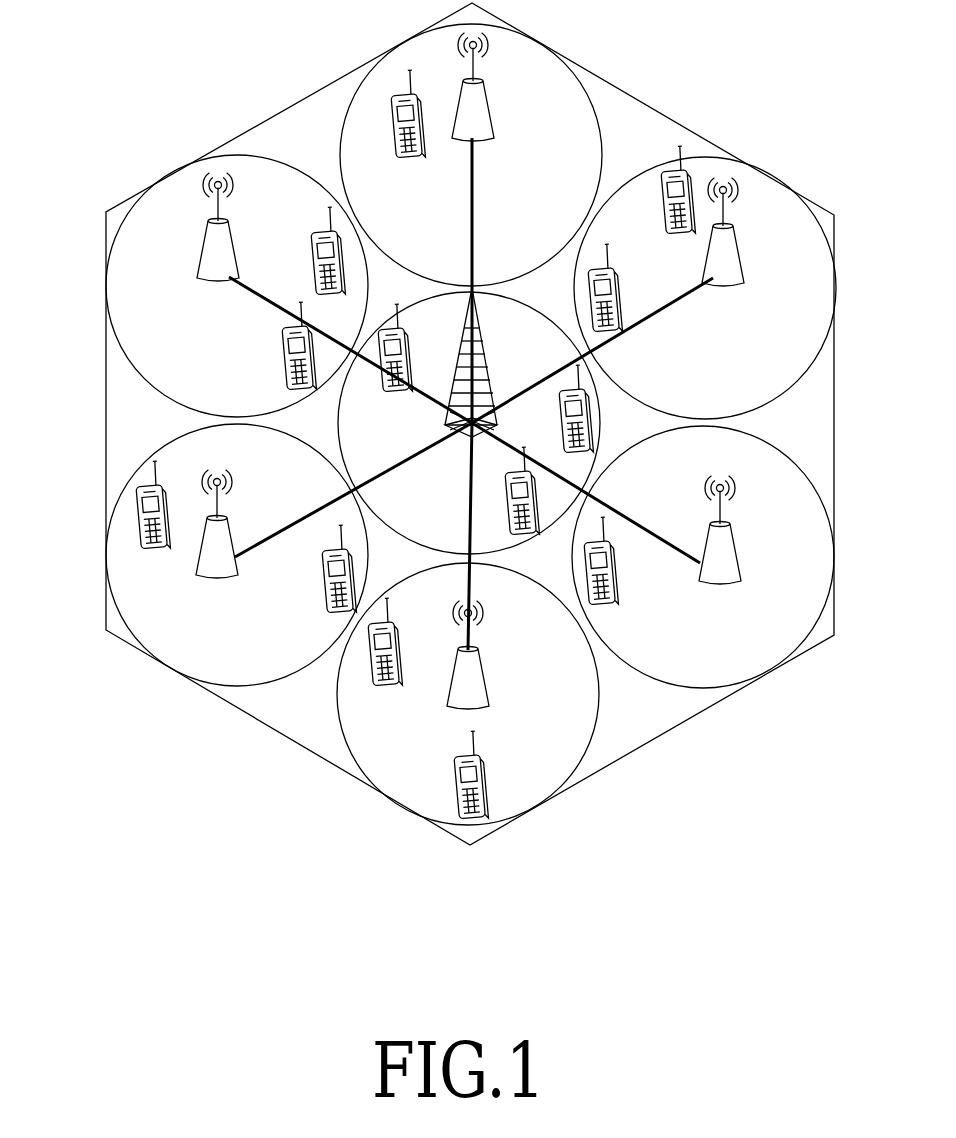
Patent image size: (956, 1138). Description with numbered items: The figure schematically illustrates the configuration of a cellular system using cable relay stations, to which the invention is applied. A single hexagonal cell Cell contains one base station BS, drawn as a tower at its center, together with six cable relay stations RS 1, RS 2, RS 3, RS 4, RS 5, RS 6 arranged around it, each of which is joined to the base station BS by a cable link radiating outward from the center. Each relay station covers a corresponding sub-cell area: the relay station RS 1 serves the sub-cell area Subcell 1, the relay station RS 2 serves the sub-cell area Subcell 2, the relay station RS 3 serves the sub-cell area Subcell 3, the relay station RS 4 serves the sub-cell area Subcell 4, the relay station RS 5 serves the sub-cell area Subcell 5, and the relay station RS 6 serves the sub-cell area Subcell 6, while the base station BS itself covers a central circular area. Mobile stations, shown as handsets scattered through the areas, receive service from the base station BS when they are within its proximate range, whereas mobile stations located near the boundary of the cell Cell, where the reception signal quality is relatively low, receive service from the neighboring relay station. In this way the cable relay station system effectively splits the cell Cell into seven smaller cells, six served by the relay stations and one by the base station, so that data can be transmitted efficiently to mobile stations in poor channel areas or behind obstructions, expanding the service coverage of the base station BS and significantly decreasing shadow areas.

The cell Cell is at (470, 424).
The base station BS is at (447, 362).
The cable relay station RS 1 is at (186, 539).
The cable relay station RS 2 is at (510, 655).
The cable relay station RS 3 is at (757, 530).
The cable relay station RS 4 is at (760, 232).
The cable relay station RS 5 is at (511, 87).
The cable relay station RS 6 is at (182, 227).
The sub-cell area Subcell 1 is at (237, 555).
The sub-cell area Subcell 2 is at (468, 694).
The sub-cell area Subcell 3 is at (703, 557).
The sub-cell area Subcell 4 is at (705, 288).
The sub-cell area Subcell 5 is at (471, 155).
The sub-cell area Subcell 6 is at (237, 286).